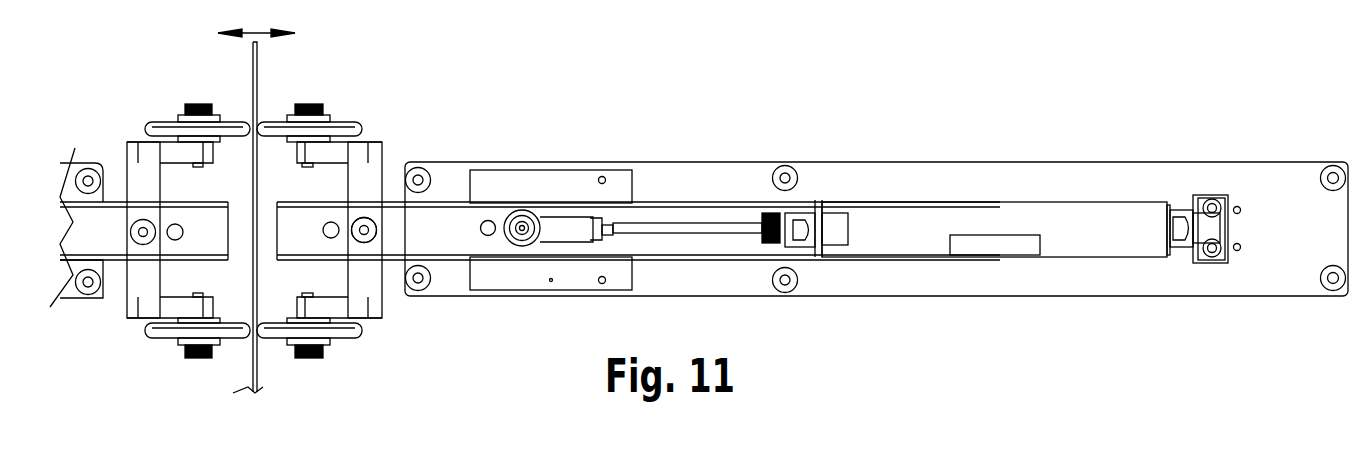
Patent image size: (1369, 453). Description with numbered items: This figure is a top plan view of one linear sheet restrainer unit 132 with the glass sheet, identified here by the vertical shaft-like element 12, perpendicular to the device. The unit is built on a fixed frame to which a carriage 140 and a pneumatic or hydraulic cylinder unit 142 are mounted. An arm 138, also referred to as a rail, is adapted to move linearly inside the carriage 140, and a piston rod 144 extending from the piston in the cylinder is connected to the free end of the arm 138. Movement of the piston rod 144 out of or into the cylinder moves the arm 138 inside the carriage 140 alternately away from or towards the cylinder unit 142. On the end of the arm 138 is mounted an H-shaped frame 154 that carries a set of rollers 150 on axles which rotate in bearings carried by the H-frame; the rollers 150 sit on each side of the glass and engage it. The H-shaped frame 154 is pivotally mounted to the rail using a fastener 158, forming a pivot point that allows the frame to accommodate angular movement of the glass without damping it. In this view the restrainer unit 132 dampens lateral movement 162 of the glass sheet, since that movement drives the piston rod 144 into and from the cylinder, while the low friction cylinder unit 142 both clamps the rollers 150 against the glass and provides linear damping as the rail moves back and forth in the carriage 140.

The shaft 12 is at (258, 70).
The linear sheet restrainer unit 132 is at (967, 131).
The arm 138 is at (675, 215).
The carriage 140 is at (561, 187).
The pneumatic or hydraulic cylinder unit 142 is at (1063, 218).
The piston rod 144 is at (708, 228).
The rollers 150 is at (160, 125).
The H-shaped frame 154 is at (367, 183).
The fastener 158 is at (370, 240).
The lateral movement 162 is at (268, 30).